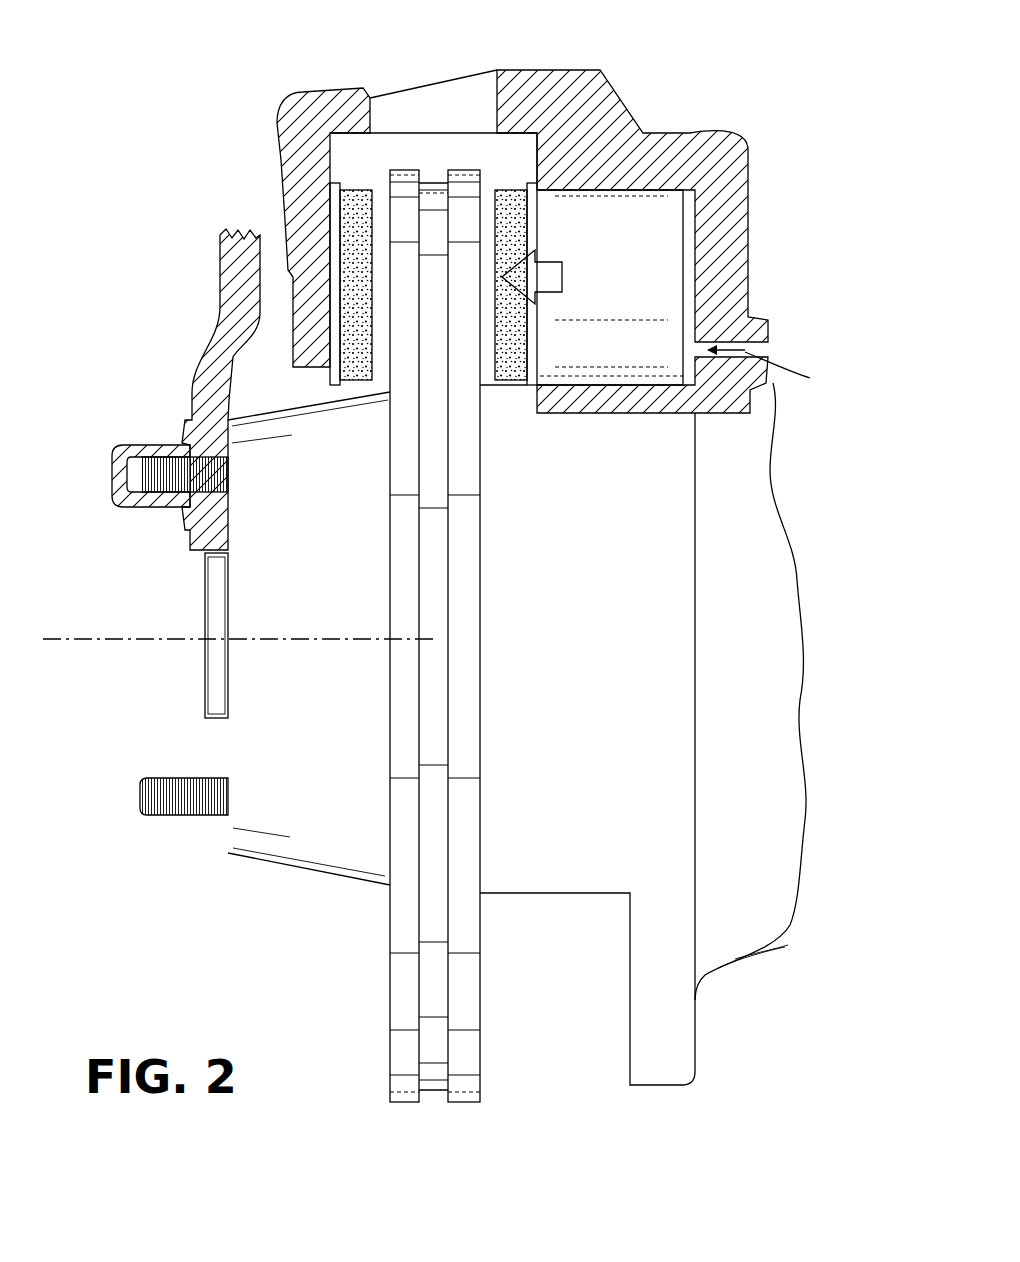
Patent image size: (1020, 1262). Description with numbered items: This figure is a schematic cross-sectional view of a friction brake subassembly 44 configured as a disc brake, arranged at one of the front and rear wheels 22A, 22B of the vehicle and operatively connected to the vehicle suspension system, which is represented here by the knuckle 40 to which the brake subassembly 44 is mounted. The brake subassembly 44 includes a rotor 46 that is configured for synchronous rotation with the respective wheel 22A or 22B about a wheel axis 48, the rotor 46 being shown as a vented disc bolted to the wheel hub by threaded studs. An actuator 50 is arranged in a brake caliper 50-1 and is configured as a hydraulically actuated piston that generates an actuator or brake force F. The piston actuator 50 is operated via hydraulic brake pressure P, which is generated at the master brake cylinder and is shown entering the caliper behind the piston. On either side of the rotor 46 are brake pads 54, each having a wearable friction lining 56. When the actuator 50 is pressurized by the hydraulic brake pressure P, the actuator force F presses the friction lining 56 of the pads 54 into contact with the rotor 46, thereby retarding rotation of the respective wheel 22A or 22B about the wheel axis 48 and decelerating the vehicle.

The knuckle 40 is at (763, 967).
The friction brake subassembly 44 is at (708, 74).
The actuator 50 is at (638, 218).
The brake caliper 50-1 is at (292, 145).
The brake pads 54 is at (436, 344).
The friction lining 56 is at (357, 343).
The rotor 46 is at (465, 530).
The front wheel 22A is at (174, 522).
The rear wheel 22B is at (150, 404).
The wheel axis 48 is at (97, 639).
The hydraulic brake pressure P is at (766, 370).
The actuator force F is at (550, 262).